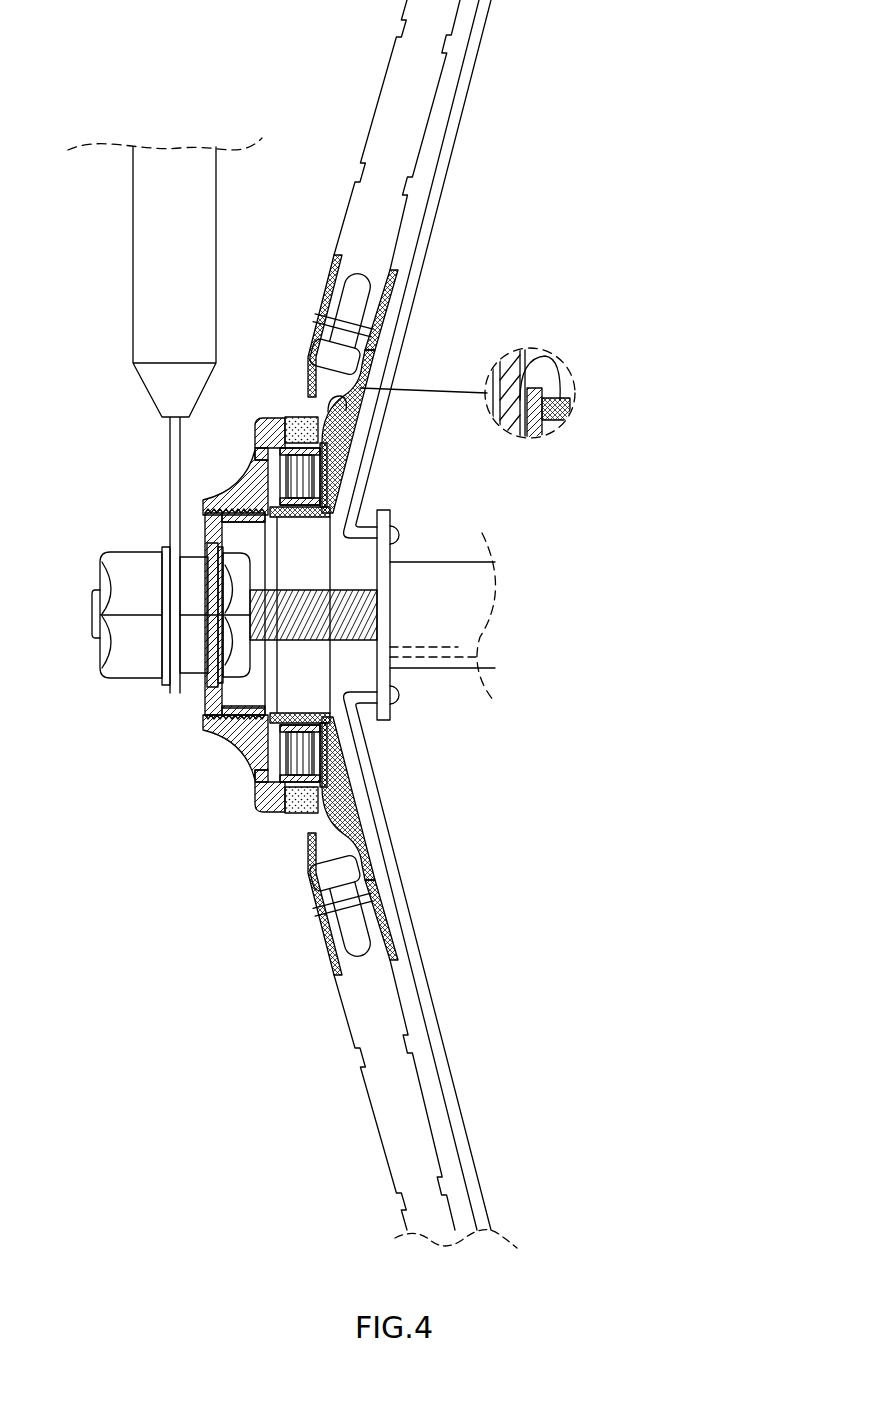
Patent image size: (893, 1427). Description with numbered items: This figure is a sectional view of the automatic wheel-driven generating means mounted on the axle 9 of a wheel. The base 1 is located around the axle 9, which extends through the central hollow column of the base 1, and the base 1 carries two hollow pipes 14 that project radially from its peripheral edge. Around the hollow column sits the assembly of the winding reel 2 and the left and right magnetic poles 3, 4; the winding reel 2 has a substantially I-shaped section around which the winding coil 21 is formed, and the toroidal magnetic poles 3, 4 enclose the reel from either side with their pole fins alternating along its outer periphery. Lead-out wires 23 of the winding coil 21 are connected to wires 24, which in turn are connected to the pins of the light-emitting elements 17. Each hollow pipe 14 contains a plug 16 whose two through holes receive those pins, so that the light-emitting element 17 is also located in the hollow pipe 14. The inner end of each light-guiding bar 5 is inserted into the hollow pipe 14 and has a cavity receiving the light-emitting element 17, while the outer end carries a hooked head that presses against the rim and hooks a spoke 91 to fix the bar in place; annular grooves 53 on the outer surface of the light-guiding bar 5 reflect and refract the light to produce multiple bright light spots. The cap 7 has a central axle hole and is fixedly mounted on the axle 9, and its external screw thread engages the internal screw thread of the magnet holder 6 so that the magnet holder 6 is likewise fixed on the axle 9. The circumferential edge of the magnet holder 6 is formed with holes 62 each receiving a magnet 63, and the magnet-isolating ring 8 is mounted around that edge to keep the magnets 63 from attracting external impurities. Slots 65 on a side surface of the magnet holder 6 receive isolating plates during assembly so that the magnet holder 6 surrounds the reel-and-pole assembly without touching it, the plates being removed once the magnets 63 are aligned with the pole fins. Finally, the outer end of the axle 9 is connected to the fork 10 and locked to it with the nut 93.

The base 1 is at (345, 815).
The winding reel 2 is at (270, 488).
The left magnetic pole 3 is at (278, 463).
The right magnetic pole 4 is at (332, 510).
The light-guiding bar 5 is at (405, 118).
The magnet holder 6 is at (250, 730).
The cap 7 is at (205, 707).
The magnet-isolating ring 8 is at (300, 416).
The axle 9 is at (100, 615).
The fork 10 is at (148, 243).
The hollow pipe 14 is at (326, 300).
The plug 16 is at (344, 905).
The light-emitting element 17 is at (360, 283).
The winding coil 21 is at (310, 758).
The lead-out wire 23 is at (558, 362).
The wire 24 is at (545, 345).
The annular groove 53 is at (396, 38).
The hole 62 is at (262, 797).
The magnet 63 is at (300, 800).
The slot 65 is at (262, 782).
The spoke 91 is at (445, 1060).
The nut 93 is at (128, 663).